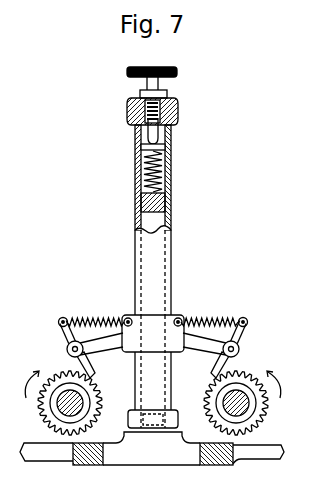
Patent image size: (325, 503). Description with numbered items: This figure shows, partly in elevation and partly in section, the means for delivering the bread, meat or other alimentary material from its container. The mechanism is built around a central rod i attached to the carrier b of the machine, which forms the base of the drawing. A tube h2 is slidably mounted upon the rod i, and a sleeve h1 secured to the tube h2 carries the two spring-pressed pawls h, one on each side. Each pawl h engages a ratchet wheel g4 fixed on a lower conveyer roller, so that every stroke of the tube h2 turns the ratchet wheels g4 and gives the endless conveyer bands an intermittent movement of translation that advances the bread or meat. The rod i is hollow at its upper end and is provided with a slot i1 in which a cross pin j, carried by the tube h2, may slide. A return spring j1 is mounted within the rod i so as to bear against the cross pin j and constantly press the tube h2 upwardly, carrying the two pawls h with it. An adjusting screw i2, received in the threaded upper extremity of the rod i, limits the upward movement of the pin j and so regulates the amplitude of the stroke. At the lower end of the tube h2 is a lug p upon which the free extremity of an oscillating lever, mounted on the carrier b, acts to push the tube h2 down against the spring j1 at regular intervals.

The adjusting screw i2 is at (176, 108).
The cross pin j is at (136, 148).
The slot i1 is at (167, 151).
The return spring j1 is at (163, 180).
The central rod i is at (160, 213).
The tube h2 is at (153, 329).
The sleeve h1 is at (153, 333).
The spring-pressed pawl h is at (112, 372).
The ratchet wheel g4 is at (50, 420).
The lug p is at (152, 424).
The carrier b is at (222, 466).